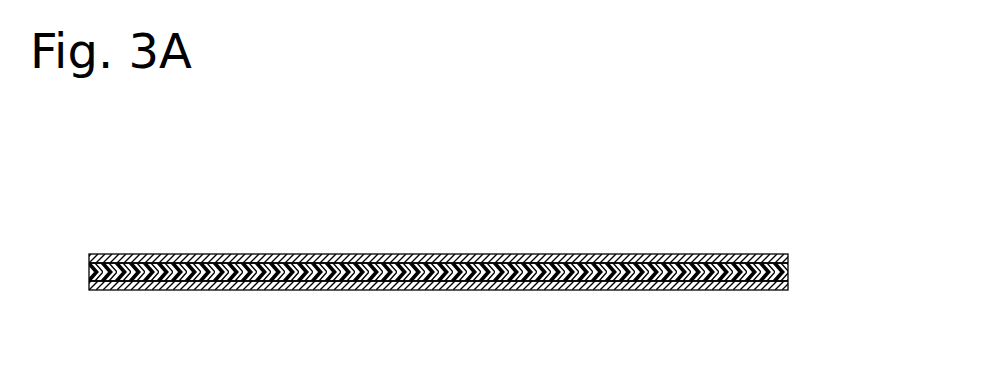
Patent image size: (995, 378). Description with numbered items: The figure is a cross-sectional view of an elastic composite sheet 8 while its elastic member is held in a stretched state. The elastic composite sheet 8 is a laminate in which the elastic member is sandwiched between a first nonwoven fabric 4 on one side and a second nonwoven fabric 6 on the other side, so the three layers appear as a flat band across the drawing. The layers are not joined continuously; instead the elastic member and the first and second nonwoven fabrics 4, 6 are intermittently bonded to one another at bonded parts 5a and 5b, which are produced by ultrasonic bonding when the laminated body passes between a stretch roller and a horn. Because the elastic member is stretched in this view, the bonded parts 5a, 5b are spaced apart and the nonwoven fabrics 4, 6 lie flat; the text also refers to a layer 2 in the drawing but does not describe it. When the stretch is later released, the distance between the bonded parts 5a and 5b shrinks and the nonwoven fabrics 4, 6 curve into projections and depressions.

The base material layer 2 is at (521, 266).
The first nonwoven fabric 4 is at (645, 257).
The second nonwoven fabric 6 is at (651, 290).
The bonded part 5a is at (203, 262).
The bonded part 5b is at (202, 282).
The elastic composite sheet 8 is at (807, 199).